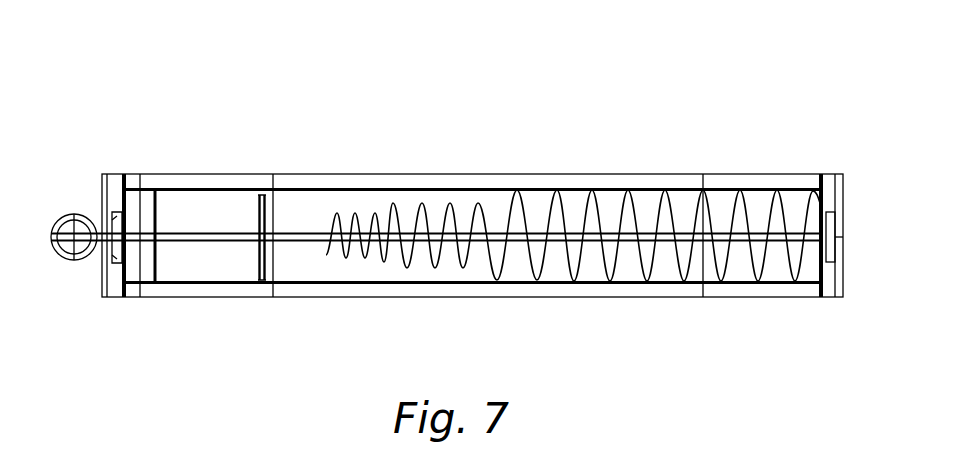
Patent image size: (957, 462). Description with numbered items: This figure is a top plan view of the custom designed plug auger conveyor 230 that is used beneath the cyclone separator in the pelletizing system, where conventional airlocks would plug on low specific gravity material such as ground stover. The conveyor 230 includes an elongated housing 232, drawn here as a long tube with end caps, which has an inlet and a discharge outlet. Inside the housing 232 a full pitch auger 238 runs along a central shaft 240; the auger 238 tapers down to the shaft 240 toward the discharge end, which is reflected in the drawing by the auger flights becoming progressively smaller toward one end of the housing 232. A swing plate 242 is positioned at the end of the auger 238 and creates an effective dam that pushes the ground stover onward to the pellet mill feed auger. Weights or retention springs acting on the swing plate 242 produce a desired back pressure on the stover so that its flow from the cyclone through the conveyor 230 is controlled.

The plug auger conveyor 230 is at (566, 150).
The housing 232 is at (528, 296).
The full pitch auger 238 is at (210, 272).
The shaft 240 is at (305, 272).
The swing plate 242 is at (267, 210).